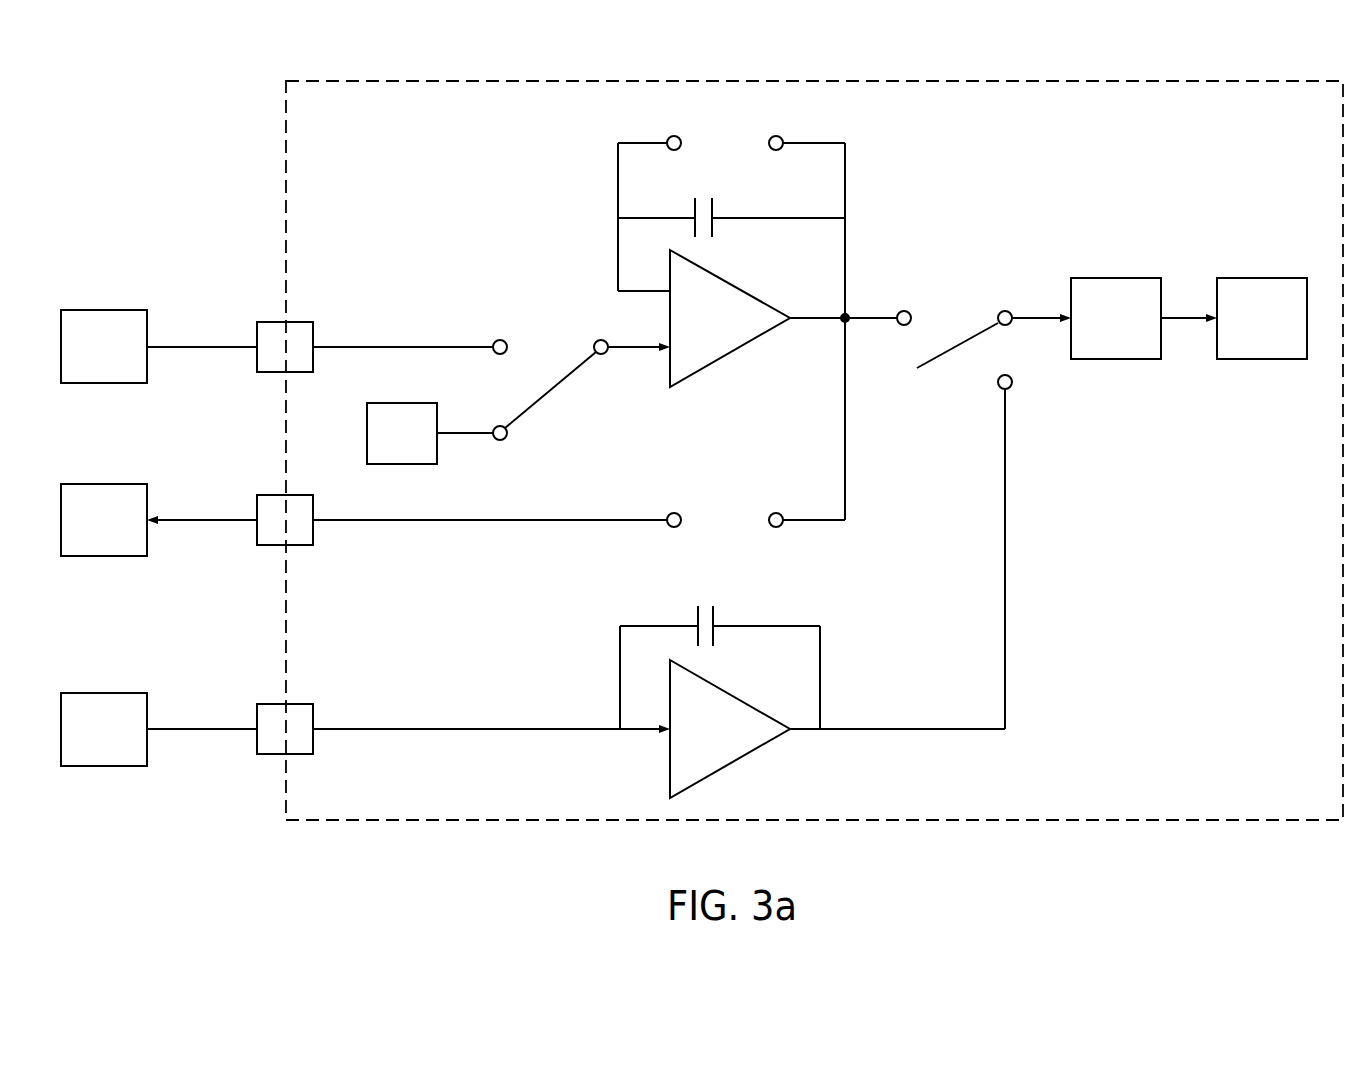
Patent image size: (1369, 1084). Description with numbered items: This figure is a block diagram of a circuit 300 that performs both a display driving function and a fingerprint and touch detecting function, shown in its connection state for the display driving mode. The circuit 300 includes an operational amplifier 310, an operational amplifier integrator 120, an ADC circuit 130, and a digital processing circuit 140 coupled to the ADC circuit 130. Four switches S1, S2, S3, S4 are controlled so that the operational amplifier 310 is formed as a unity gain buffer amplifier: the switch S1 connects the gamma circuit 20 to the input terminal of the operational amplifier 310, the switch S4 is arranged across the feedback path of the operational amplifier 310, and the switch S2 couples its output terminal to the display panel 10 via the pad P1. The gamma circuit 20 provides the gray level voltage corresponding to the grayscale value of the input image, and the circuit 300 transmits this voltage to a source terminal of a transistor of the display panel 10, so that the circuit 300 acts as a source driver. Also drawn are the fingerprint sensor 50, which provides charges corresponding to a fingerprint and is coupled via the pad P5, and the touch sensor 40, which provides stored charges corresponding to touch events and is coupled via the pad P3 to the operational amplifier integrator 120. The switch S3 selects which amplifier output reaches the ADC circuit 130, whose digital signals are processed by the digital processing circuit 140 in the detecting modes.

The circuit 300 is at (1313, 800).
The fingerprint sensor 50 is at (120, 362).
The pad P5 is at (300, 362).
The display panel 10 is at (120, 535).
The pad P1 is at (300, 535).
The touch sensor 40 is at (120, 745).
The pad P3 is at (300, 745).
The gamma circuit 20 is at (417, 450).
The switch S1 is at (550, 390).
The operational amplifier 310 is at (733, 333).
The switch S4 is at (731, 129).
The switch S2 is at (756, 505).
The switch S3 is at (964, 350).
The ADC circuit 130 is at (1138, 333).
The digital processing circuit 140 is at (1284, 333).
The operational amplifier integrator 120 is at (732, 746).